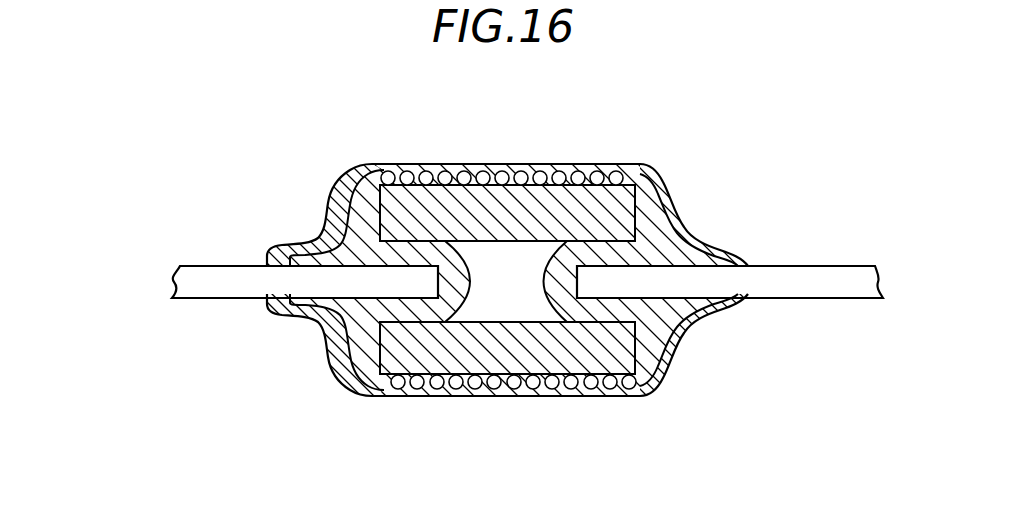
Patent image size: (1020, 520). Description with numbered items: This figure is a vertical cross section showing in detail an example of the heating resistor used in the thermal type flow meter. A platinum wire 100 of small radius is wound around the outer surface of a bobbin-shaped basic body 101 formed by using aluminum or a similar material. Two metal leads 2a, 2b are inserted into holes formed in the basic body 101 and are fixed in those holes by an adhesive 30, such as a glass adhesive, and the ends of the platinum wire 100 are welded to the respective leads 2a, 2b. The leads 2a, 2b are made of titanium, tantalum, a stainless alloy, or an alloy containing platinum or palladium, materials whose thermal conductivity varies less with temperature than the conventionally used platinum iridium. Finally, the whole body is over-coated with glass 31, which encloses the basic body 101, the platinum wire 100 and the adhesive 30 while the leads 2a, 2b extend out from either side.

The metal lead 2a is at (782, 283).
The metal lead 2b is at (237, 278).
The adhesive 30 is at (394, 314).
The glass 31 is at (660, 225).
The platinum wire 100 is at (545, 164).
The basic body 101 is at (448, 218).